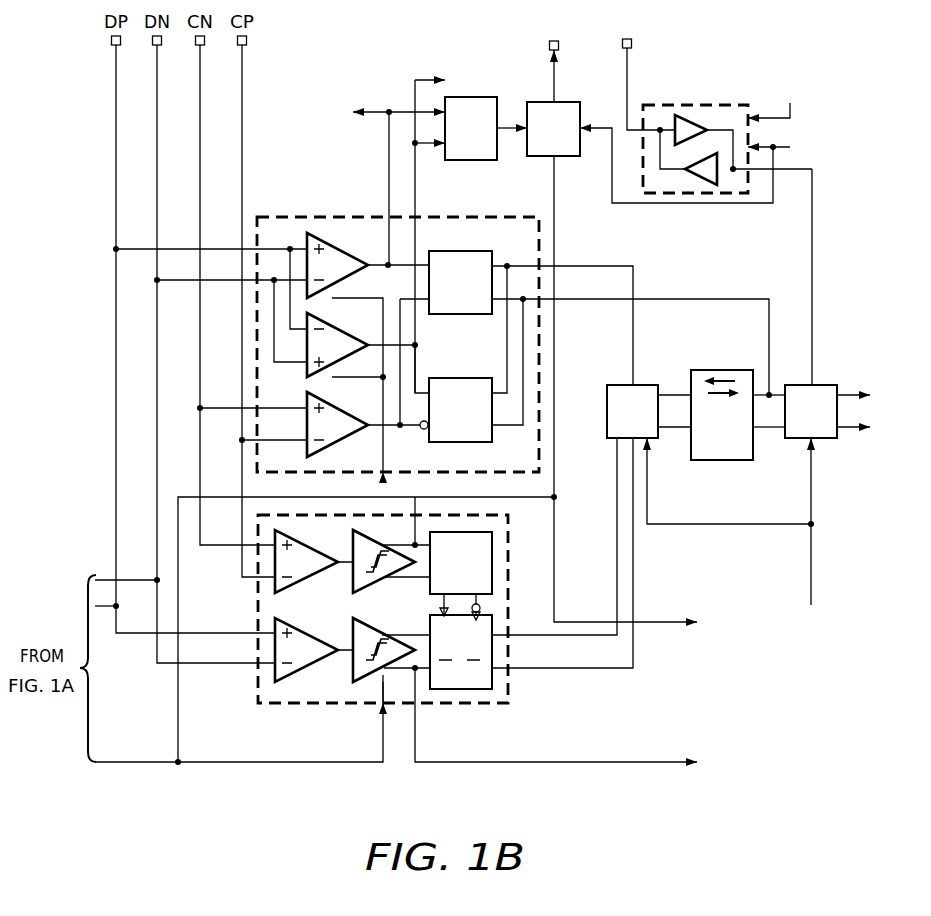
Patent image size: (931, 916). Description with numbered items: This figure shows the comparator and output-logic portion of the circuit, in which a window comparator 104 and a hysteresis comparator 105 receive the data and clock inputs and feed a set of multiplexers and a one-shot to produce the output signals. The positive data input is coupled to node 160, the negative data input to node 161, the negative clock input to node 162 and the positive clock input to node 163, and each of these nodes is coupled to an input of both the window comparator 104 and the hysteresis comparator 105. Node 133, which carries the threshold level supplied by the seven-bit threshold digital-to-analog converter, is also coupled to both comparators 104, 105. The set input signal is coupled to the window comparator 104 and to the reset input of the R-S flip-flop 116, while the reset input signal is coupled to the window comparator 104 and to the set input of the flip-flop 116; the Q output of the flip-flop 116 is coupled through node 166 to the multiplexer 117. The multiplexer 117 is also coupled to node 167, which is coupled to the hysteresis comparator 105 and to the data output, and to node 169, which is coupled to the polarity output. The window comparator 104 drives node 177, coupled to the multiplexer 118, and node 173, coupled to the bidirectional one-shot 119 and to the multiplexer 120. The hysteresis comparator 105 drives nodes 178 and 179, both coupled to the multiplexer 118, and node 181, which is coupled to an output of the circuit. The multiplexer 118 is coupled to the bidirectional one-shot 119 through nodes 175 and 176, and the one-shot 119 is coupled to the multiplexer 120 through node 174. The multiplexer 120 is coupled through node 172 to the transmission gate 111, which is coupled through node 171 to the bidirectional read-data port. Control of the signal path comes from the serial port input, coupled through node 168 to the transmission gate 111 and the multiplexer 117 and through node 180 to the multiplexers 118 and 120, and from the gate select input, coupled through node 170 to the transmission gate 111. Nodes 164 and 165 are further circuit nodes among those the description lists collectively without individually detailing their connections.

The window comparator 104 is at (300, 217).
The hysteresis comparator 105 is at (508, 688).
The transmission gate 111 is at (728, 105).
The R-S flip-flop 116 is at (470, 162).
The multiplexer 117 is at (568, 158).
The multiplexer 118 is at (622, 385).
The bidirectional one-shot 119 is at (722, 370).
The multiplexer 120 is at (828, 440).
The node 133 is at (270, 764).
The node 160 is at (116, 86).
The node 161 is at (157, 148).
The node 162 is at (200, 148).
The node 163 is at (242, 86).
The node 164 is at (380, 112).
The node 165 is at (418, 80).
The node 166 is at (506, 133).
The node 167 is at (556, 236).
The node 168 is at (647, 205).
The node 169 is at (556, 90).
The node 170 is at (795, 118).
The node 171 is at (628, 82).
The node 172 is at (813, 240).
The node 173 is at (712, 299).
The node 174 is at (765, 428).
The node 175 is at (680, 395).
The node 176 is at (683, 428).
The node 177 is at (636, 300).
The node 178 is at (617, 553).
The node 179 is at (633, 550).
The node 180 is at (810, 545).
The node 181 is at (578, 764).